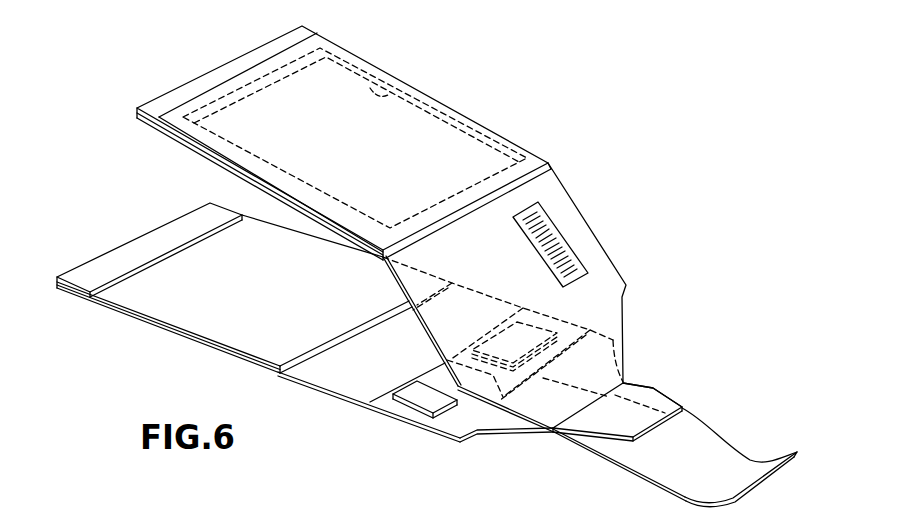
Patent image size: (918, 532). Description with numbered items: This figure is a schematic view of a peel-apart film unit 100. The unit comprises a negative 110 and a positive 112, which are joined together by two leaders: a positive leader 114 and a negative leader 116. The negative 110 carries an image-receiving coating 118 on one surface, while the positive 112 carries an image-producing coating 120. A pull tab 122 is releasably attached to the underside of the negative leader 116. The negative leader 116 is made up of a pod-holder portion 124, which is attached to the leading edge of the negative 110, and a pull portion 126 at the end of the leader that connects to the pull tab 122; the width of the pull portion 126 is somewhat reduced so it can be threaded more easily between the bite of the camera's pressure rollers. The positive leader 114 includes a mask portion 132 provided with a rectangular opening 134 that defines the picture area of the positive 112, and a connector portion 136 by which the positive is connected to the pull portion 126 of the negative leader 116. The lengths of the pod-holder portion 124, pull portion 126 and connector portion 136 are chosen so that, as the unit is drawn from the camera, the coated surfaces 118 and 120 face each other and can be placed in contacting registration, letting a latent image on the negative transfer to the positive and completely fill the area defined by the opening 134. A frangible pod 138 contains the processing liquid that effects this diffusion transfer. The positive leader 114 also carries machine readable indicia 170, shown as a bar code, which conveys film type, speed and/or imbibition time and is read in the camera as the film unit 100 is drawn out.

The peel-apart film unit 100 is at (516, 65).
The negative 110 is at (148, 328).
The image-receiving coating 118 is at (220, 335).
The pod-holder portion 124 is at (341, 382).
The positive 112 is at (506, 130).
The mask portion 132 is at (227, 167).
The image-producing coating 120 is at (393, 74).
The rectangular opening 134 is at (323, 78).
The positive leader 114 is at (630, 291).
The machine readable indicia 170 is at (553, 229).
The connector portion 136 is at (621, 333).
The negative leader 116 is at (337, 402).
The frangible pod 138 is at (426, 392).
The pull portion 126 is at (518, 437).
The pull tab 122 is at (723, 443).